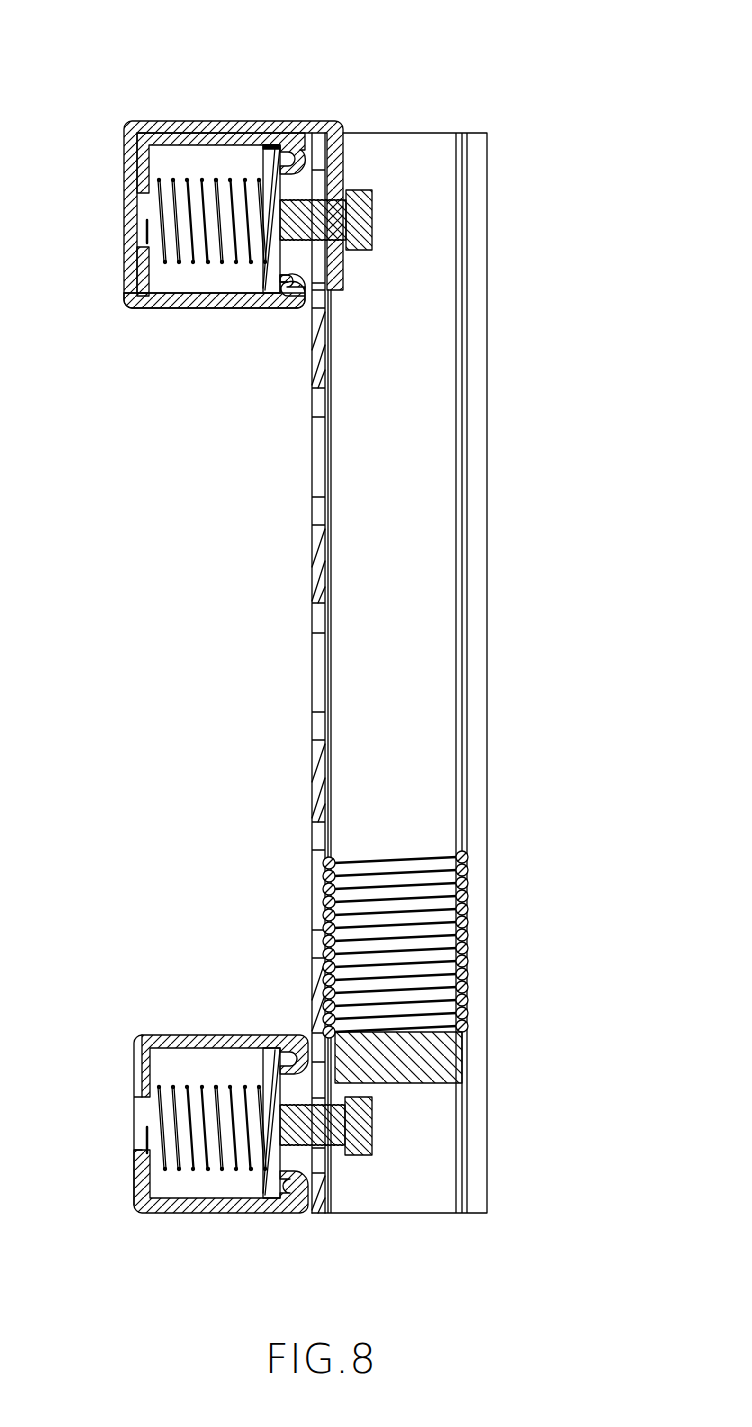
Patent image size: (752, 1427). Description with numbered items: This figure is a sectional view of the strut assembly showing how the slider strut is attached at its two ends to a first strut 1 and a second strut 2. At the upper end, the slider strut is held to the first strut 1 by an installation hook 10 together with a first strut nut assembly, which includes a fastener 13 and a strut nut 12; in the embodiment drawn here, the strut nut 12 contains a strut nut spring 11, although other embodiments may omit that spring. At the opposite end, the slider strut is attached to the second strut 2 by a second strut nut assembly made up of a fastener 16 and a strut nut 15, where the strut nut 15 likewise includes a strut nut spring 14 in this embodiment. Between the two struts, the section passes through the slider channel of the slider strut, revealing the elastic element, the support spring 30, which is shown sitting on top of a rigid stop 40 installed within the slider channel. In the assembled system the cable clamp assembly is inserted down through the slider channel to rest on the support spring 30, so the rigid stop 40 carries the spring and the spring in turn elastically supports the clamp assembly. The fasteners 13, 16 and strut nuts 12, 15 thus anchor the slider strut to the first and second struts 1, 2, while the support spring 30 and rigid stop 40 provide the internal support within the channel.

The first strut 1 is at (140, 308).
The second strut 2 is at (178, 1213).
The installation hook 10 is at (205, 120).
The strut nut spring 11 is at (182, 264).
The strut nut 12 is at (274, 290).
The fastener 13 is at (362, 233).
The strut nut spring 14 is at (189, 1085).
The strut nut 15 is at (270, 1075).
The fastener 16 is at (363, 1140).
The support spring 30 is at (433, 915).
The rigid stop 40 is at (433, 1055).